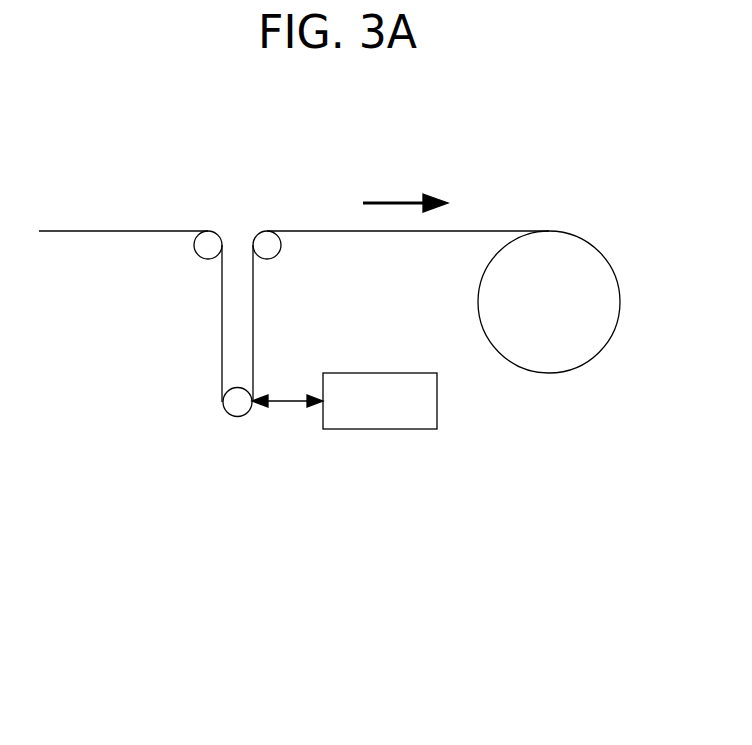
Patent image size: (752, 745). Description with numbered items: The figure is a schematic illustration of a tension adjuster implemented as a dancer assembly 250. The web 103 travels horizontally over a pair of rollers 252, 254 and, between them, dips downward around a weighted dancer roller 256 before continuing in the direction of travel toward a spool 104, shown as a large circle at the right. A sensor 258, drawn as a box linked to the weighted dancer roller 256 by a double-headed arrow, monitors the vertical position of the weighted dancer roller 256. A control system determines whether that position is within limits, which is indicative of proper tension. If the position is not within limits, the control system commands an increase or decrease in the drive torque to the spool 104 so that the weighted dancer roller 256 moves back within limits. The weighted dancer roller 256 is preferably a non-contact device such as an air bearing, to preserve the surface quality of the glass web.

The dancer assembly 250 is at (359, 117).
The web 103 is at (109, 225).
The roller 252 is at (223, 230).
The roller 254 is at (263, 228).
The weighted dancer roller 256 is at (248, 397).
The sensor 258 is at (393, 382).
The spool 104 is at (587, 253).